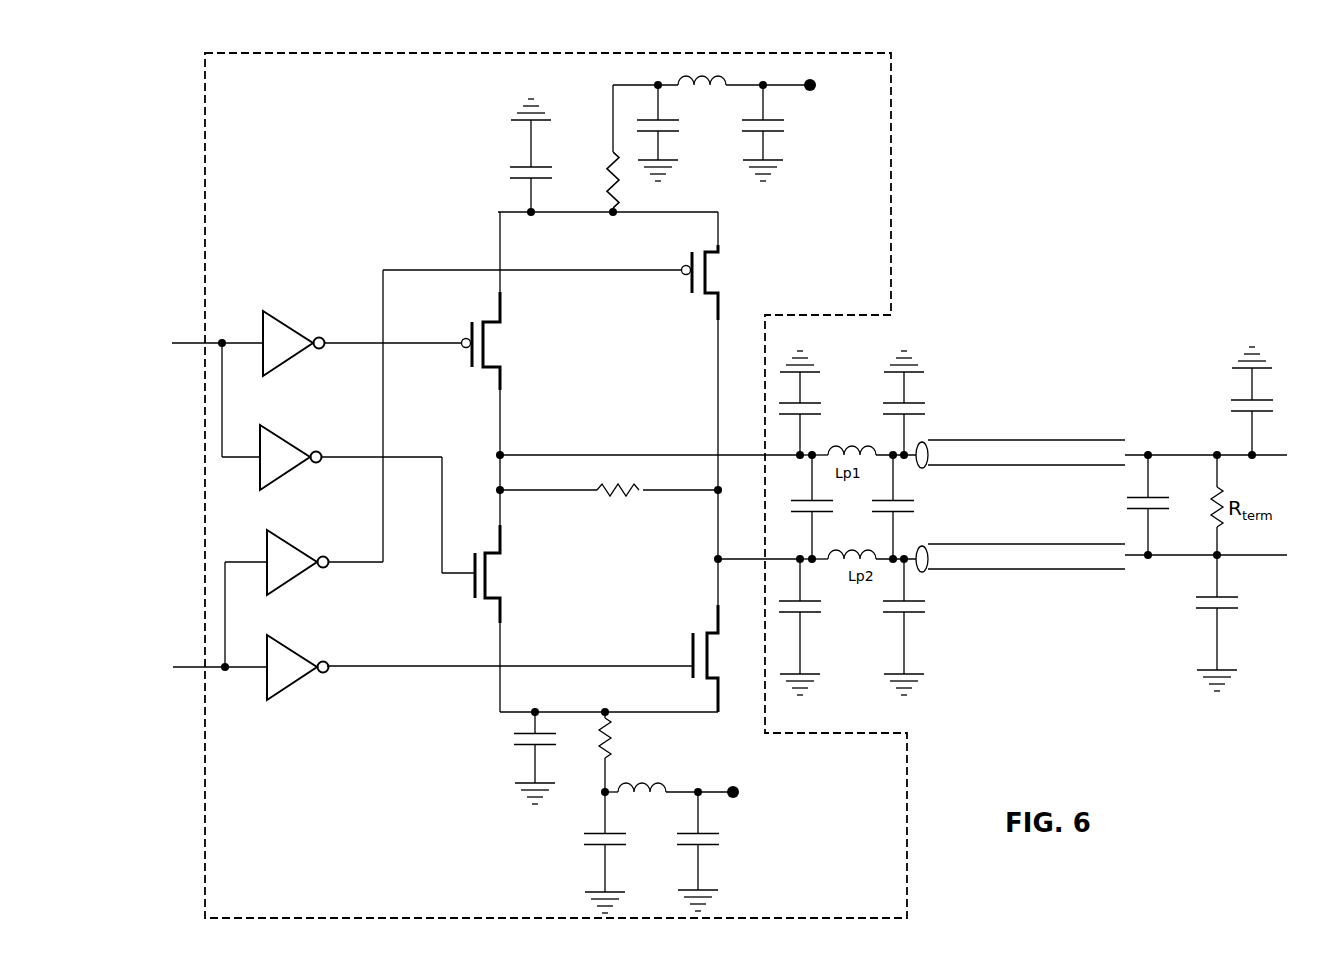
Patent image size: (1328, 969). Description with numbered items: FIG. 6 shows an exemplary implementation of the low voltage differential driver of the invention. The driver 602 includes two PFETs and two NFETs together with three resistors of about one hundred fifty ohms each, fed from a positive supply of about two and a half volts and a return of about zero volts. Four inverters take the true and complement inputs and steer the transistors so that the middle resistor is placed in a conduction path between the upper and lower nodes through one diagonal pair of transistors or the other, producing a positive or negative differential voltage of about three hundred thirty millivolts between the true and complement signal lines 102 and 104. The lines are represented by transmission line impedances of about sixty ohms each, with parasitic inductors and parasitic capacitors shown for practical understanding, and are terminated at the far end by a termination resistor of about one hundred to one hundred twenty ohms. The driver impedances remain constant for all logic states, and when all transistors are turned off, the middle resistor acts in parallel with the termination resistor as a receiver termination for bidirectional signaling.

The driver 602 is at (891, 140).
The true signal line 102 is at (1137, 453).
The complement signal line 104 is at (1170, 557).